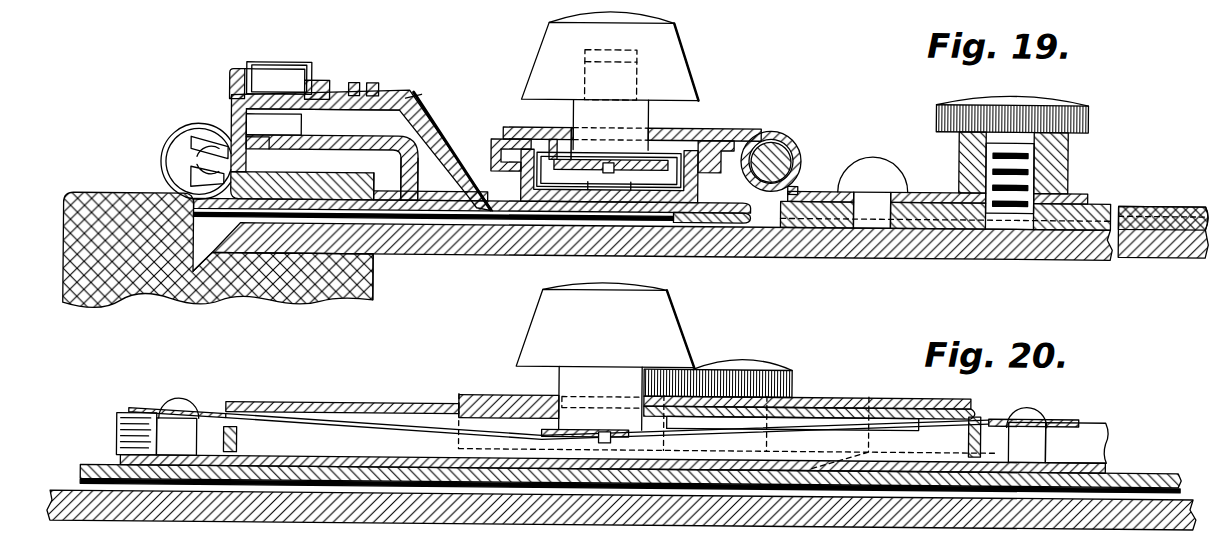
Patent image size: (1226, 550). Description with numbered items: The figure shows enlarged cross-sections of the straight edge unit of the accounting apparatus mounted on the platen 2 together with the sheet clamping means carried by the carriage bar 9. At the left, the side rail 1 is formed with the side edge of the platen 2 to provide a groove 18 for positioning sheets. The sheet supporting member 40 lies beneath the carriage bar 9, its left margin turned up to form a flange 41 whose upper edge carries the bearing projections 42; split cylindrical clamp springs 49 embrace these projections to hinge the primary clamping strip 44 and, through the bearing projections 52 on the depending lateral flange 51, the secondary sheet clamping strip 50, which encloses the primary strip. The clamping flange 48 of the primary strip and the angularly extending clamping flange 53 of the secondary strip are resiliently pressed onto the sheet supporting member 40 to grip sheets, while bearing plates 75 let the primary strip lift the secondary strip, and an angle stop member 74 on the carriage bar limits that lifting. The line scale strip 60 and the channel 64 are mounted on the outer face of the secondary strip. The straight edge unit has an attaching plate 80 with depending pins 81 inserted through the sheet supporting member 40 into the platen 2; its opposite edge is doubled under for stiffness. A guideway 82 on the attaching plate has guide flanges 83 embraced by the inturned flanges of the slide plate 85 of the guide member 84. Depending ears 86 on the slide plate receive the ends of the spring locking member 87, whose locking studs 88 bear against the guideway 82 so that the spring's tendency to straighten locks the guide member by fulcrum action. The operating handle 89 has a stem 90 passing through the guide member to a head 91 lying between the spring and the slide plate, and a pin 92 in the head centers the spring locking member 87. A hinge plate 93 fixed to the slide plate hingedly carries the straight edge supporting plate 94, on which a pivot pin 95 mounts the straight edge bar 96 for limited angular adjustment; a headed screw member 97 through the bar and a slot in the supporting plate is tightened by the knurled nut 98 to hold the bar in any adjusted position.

In FIG. 19, the side rail 1 is at (97, 307).
In FIG. 19, the groove 18 is at (212, 305).
In FIG. 19, the platen 2 is at (770, 257).
In FIG. 20, the platen 2 is at (414, 525).
In FIG. 19, the sheet supporting member 40 is at (418, 226).
In FIG. 19, the pins 81 is at (470, 213).
In FIG. 19, the attaching plate 80 is at (645, 221).
In FIG. 20, the attaching plate 80 is at (512, 489).
In FIG. 19, the locking studs 88 is at (605, 191).
In FIG. 20, the locking studs 88 is at (178, 404).
In FIG. 19, the carriage bar 9 is at (383, 184).
In FIG. 19, the flange 41 is at (250, 190).
In FIG. 19, the bearing projections 42 is at (190, 182).
In FIG. 19, the split cylindrical clamp springs 49 is at (170, 146).
In FIG. 19, the bearing projections 52 is at (212, 140).
In FIG. 19, the depending lateral flange 51 is at (245, 130).
In FIG. 19, the bearing plates 75 is at (277, 150).
In FIG. 19, the secondary sheet clamping strip 50 is at (322, 122).
In FIG. 19, the primary clamping strip 44 is at (375, 146).
In FIG. 19, the clamping flange 48 is at (418, 180).
In FIG. 19, the line scale strip 60 is at (424, 105).
In FIG. 19, the clamping flange 53 is at (448, 134).
In FIG. 19, the channel 64 is at (236, 72).
In FIG. 19, the angle stop member 74 is at (258, 66).
In FIG. 19, the slide plate 85 is at (502, 140).
In FIG. 20, the slide plate 85 is at (345, 405).
In FIG. 19, the depending ears 86 is at (550, 140).
In FIG. 20, the depending ears 86 is at (238, 440).
In FIG. 19, the head 91 is at (570, 130).
In FIG. 20, the head 91 is at (548, 418).
In FIG. 19, the spring locking member 87 is at (580, 160).
In FIG. 20, the spring locking member 87 is at (405, 418).
In FIG. 19, the pin 92 is at (608, 163).
In FIG. 20, the pin 92 is at (607, 432).
In FIG. 19, the stem 90 is at (636, 122).
In FIG. 20, the stem 90 is at (582, 372).
In FIG. 19, the guide member 84 is at (680, 132).
In FIG. 20, the guide member 84 is at (855, 400).
In FIG. 19, the guide flanges 83 is at (740, 140).
In FIG. 19, the operating handle 89 is at (552, 48).
In FIG. 20, the operating handle 89 is at (672, 330).
In FIG. 19, the hinge plate 93 is at (775, 135).
In FIG. 20, the hinge plate 93 is at (840, 396).
In FIG. 19, the guideway 82 is at (698, 190).
In FIG. 20, the guideway 82 is at (1108, 442).
In FIG. 19, the straight edge supporting plate 94 is at (810, 192).
In FIG. 19, the pivot pin 95 is at (882, 170).
In FIG. 19, the knurled nut 98 is at (1030, 98).
In FIG. 19, the headed screw member 97 is at (1012, 212).
In FIG. 19, the straight edge bar 96 is at (1140, 203).